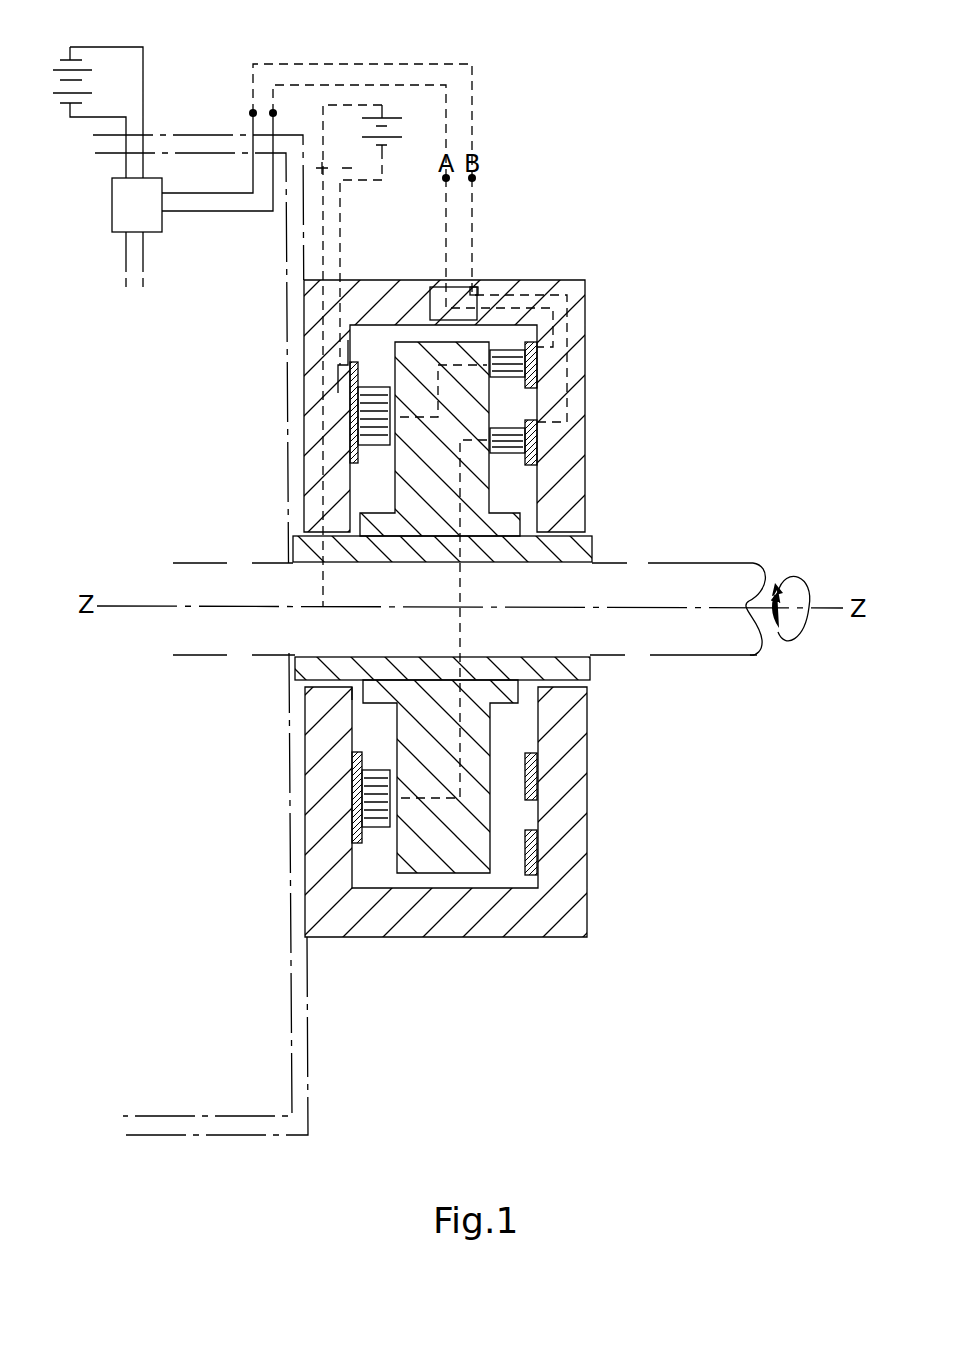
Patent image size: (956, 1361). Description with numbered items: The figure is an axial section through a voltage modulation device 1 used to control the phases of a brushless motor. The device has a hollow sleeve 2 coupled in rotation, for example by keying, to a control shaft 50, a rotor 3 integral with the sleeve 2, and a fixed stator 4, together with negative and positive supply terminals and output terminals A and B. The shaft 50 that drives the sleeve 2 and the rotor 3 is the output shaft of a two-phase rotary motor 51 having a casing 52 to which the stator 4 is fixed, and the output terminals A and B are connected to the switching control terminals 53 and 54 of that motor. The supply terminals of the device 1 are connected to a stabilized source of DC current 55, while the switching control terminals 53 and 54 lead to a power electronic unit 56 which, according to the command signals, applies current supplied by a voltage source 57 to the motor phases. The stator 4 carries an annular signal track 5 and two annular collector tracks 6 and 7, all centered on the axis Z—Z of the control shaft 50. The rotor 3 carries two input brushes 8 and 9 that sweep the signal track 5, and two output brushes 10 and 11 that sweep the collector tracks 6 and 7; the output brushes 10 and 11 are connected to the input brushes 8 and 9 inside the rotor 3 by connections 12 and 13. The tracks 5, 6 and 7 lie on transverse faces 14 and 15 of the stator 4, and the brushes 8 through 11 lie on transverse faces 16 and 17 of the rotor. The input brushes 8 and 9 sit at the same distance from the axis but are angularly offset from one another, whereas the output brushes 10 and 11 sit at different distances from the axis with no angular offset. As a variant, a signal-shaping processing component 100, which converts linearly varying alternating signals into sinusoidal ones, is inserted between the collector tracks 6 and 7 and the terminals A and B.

The voltage modulation device 1 is at (663, 378).
The hollow sleeve 2 is at (596, 550).
The rotor 3 is at (500, 490).
The stator 4 is at (592, 365).
The annular signal track 5 is at (365, 462).
The annular collector track 6 is at (515, 795).
The annular collector track 7 is at (518, 868).
The input brush 8 is at (372, 385).
The input brush 9 is at (373, 830).
The output brush 10 is at (512, 345).
The output brush 11 is at (512, 458).
The connection 12 is at (438, 420).
The connection 13 is at (467, 638).
The transverse face 14 is at (350, 728).
The transverse face 15 is at (530, 718).
The transverse face 16 is at (492, 875).
The transverse face 17 is at (512, 878).
The control shaft 50 is at (735, 657).
The two-phase rotary motor 51 is at (313, 1047).
The casing 52 is at (287, 342).
The switching control terminal 53 is at (253, 113).
The switching control terminal 54 is at (270, 112).
The stabilized source of DC current 55 is at (400, 123).
The power electronic unit 56 is at (153, 219).
The voltage source 57 is at (70, 130).
The signal-shaping processing component 100 is at (497, 283).